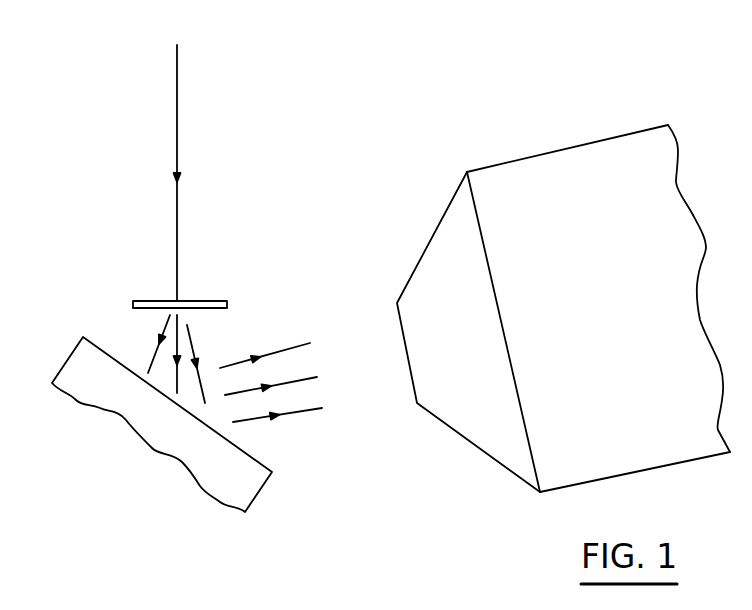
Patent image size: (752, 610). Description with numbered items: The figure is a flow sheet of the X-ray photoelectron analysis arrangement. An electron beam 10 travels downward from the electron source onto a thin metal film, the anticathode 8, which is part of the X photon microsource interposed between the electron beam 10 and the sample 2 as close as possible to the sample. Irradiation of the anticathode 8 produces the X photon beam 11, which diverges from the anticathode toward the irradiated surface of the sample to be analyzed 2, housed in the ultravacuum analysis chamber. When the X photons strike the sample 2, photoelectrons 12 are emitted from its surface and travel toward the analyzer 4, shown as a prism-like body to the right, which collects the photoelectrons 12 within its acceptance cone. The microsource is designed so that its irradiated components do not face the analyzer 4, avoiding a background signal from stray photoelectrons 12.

The sample to be analyzed 2 is at (197, 435).
The analyzer 4 is at (555, 187).
The anticathode 8 is at (150, 301).
The electron beam 10 is at (177, 137).
The X photon beam 11 is at (147, 347).
The photoelectrons 12 is at (297, 422).